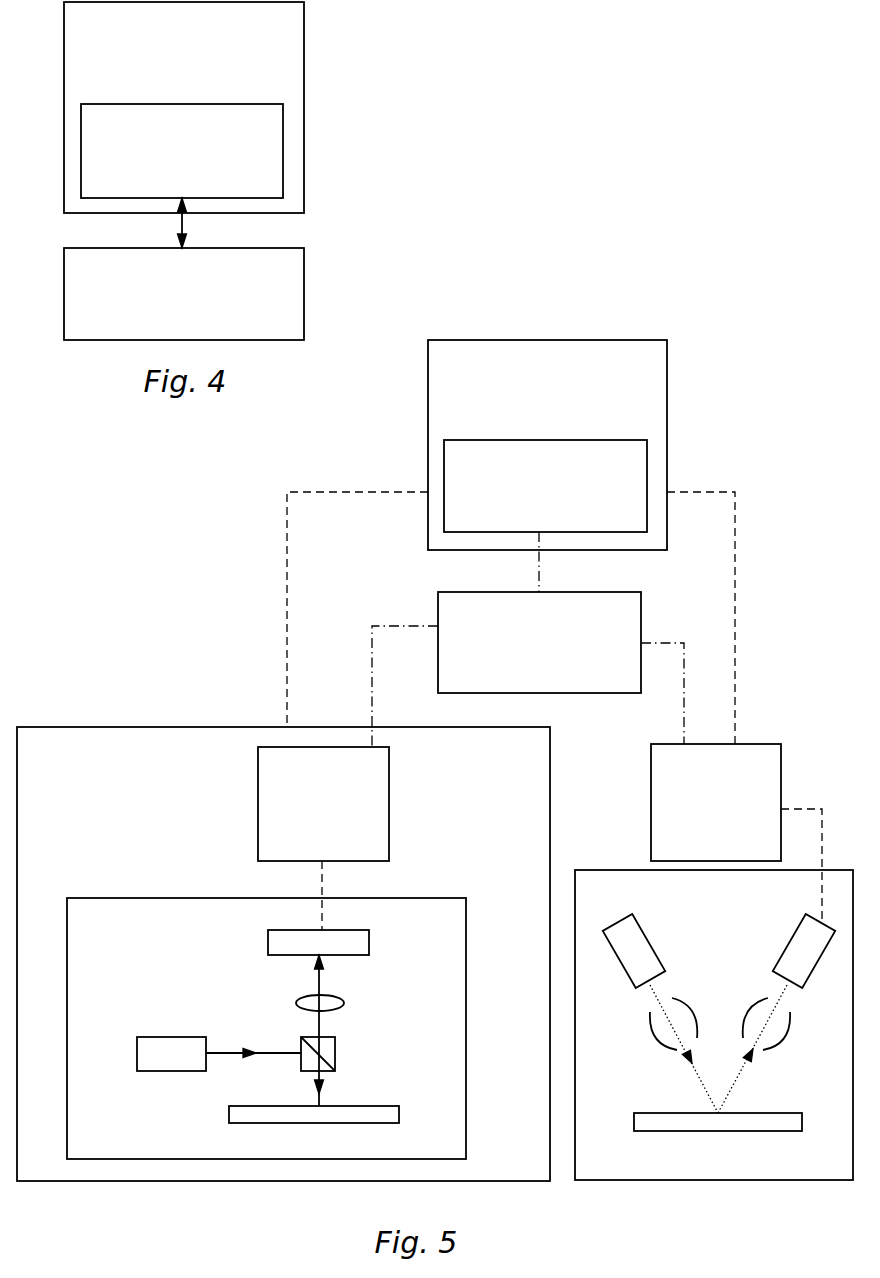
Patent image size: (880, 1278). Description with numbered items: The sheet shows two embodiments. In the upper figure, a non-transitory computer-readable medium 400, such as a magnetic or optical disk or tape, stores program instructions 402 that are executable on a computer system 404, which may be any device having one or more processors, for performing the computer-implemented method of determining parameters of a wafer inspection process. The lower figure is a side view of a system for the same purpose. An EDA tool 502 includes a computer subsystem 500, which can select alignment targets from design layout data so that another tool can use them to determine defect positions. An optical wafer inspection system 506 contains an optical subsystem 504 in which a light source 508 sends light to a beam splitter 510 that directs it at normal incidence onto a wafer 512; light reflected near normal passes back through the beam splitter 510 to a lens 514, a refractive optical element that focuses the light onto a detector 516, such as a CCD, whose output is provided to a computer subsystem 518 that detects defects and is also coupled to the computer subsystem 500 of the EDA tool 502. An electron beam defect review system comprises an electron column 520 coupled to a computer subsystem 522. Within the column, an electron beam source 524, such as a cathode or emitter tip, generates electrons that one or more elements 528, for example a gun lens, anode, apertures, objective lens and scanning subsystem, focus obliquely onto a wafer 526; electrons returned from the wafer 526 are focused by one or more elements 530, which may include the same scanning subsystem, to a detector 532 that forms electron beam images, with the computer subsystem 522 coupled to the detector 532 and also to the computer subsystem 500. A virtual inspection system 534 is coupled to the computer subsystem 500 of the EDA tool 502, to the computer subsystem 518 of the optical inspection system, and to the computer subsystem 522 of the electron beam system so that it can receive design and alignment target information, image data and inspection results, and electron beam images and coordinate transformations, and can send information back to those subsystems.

In FIG. 4, the non-transitory computer-readable medium 400 is at (166, 91).
In FIG. 4, the program instructions 402 is at (166, 187).
In FIG. 4, the computer system 404 is at (166, 317).
In FIG. 5, the computer subsystem 500 is at (528, 524).
In FIG. 5, the EDA tool 502 is at (530, 414).
In FIG. 5, the optical subsystem 504 is at (466, 943).
In FIG. 5, the optical wafer inspection system 506 is at (550, 793).
In FIG. 5, the light source 508 is at (158, 1037).
In FIG. 5, the beam splitter 510 is at (335, 1056).
In FIG. 5, the wafer 512 is at (247, 1106).
In FIG. 5, the lens 514 is at (342, 998).
In FIG. 5, the detector 516 is at (268, 941).
In FIG. 5, the computer subsystem 518 is at (305, 842).
In FIG. 5, the electron column 520 is at (630, 870).
In FIG. 5, the computer subsystem 522 is at (698, 842).
In FIG. 5, the electron beam source 524 is at (638, 926).
In FIG. 5, the wafer 526 is at (760, 1113).
In FIG. 5, the one or more elements 528 is at (660, 1044).
In FIG. 5, the one or more elements 530 is at (786, 1044).
In FIG. 5, the detector 532 is at (800, 927).
In FIG. 5, the virtual inspection system 534 is at (522, 679).